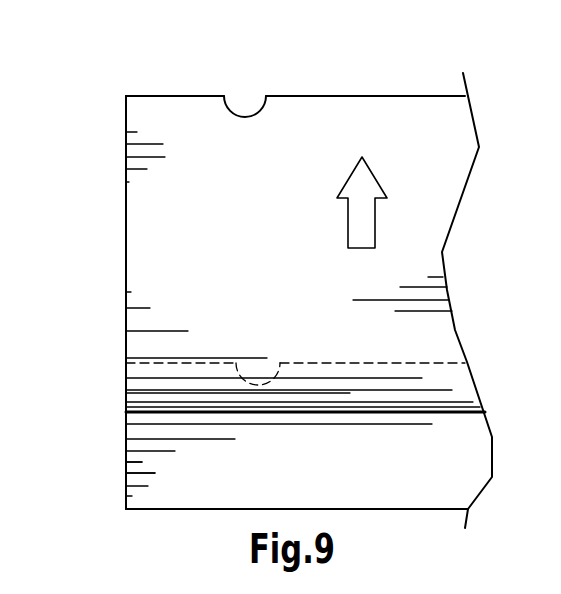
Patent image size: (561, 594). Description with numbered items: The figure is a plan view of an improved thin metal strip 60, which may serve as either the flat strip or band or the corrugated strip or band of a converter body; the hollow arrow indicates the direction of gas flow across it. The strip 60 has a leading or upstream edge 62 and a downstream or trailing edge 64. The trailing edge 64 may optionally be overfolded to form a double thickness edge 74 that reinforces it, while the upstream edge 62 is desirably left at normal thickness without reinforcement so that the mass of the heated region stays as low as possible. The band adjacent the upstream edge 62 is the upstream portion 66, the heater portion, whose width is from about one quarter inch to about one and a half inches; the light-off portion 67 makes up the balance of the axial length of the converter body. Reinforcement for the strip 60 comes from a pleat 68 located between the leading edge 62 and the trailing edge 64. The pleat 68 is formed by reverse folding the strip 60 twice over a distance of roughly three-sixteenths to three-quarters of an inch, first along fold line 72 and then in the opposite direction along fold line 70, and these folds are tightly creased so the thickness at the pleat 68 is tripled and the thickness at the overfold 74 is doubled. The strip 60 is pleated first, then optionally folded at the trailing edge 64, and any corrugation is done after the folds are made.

The thin metal strip 60 is at (287, 235).
The leading or upstream edge 62 is at (183, 507).
The downstream or trailing edge 64 is at (265, 102).
The upstream portion 66 is at (178, 467).
The light-off portion 67 is at (177, 216).
The pleat 68 is at (163, 390).
The fold line 70 is at (273, 413).
The fold line 72 is at (281, 360).
The double thickness edge 74 is at (151, 112).